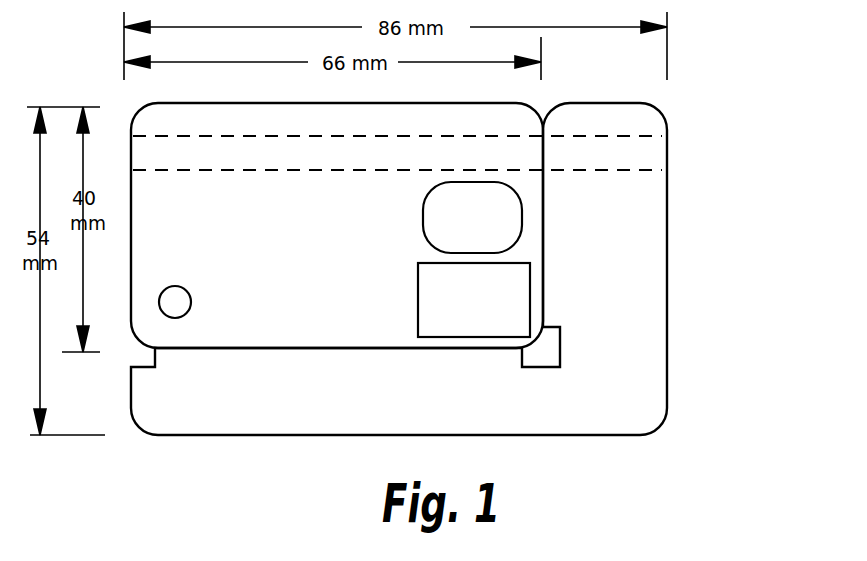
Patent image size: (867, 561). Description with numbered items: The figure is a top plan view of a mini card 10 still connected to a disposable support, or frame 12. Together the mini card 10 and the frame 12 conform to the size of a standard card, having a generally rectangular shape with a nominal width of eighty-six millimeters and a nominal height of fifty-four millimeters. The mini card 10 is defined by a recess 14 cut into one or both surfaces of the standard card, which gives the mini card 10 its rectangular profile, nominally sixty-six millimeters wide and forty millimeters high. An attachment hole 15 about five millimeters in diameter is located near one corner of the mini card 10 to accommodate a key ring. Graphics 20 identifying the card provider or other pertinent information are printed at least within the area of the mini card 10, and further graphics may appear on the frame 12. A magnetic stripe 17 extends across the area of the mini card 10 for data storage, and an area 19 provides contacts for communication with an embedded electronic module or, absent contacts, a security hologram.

The mini card 10 is at (527, 243).
The frame 12 is at (587, 417).
The recess 14 is at (543, 298).
The attachment hole 15 is at (177, 308).
The magnetic stripe 17 is at (617, 152).
The area 19 is at (497, 207).
The graphics 20 is at (355, 360).